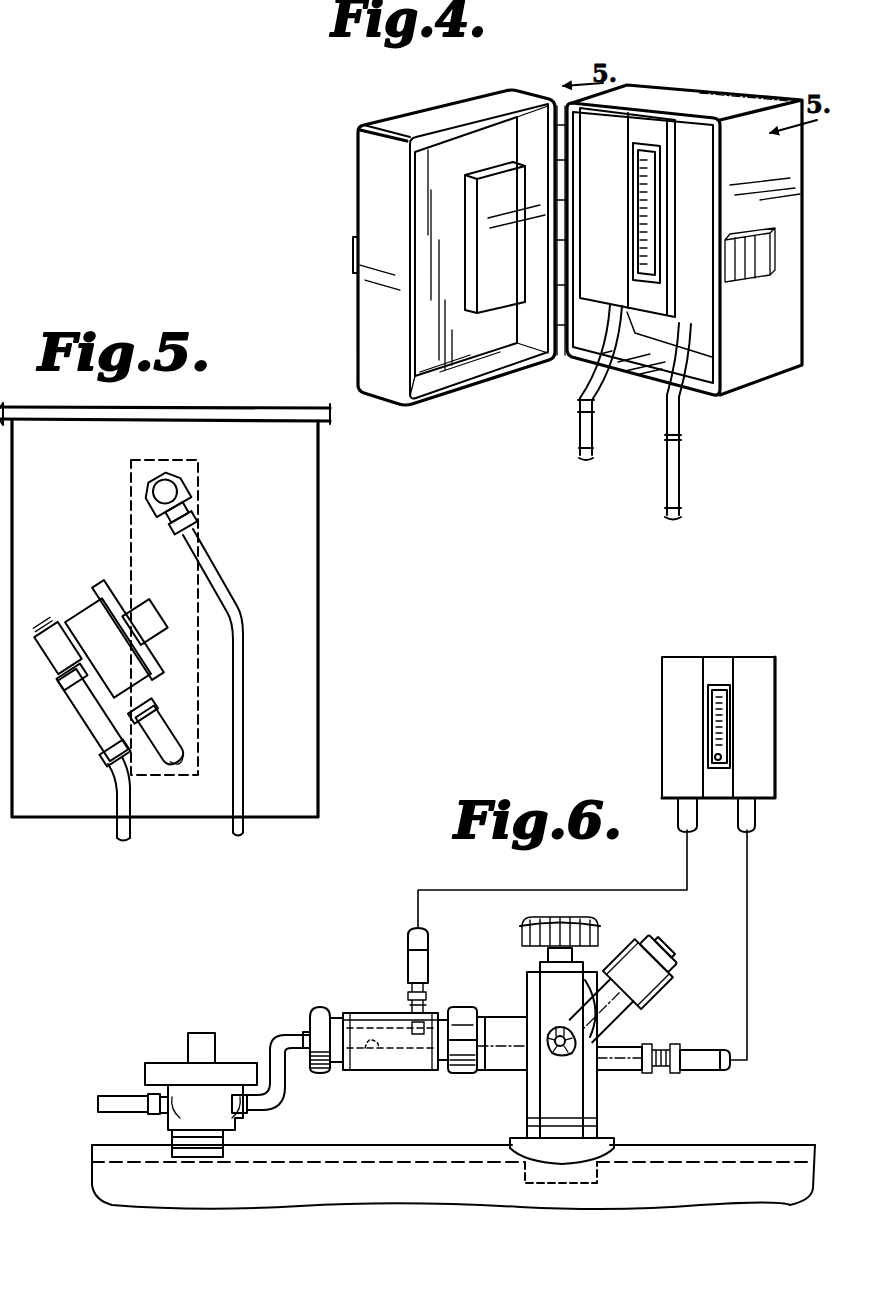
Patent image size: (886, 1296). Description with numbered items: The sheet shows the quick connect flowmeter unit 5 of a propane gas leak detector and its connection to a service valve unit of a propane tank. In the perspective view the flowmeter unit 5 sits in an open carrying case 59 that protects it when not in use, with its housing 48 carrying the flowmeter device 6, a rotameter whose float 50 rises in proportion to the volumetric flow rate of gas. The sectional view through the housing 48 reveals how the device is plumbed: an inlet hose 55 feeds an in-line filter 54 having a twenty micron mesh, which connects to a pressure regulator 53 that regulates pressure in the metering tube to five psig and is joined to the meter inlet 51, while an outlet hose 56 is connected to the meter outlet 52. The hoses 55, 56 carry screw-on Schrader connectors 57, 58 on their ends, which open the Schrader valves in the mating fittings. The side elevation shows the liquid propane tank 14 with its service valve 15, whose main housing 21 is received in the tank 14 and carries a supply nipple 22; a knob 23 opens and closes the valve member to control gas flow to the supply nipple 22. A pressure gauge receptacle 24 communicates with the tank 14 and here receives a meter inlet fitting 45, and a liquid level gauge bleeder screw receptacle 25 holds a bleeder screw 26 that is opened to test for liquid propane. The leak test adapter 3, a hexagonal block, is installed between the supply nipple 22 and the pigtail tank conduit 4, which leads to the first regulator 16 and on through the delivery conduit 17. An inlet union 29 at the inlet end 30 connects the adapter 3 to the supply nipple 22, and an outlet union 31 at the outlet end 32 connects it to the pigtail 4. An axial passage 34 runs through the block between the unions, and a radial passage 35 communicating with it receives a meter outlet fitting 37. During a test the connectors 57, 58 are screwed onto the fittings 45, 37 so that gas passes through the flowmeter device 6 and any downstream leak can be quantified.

In FIG. 6, the leak test adapter 3 is at (393, 1035).
In FIG. 6, the tank conduit 4 is at (277, 1040).
In FIG. 4, the flowmeter unit 5 is at (690, 130).
In FIG. 5, the flowmeter unit 5 is at (320, 586).
In FIG. 6, the flowmeter unit 5 is at (684, 655).
In FIG. 4, the flowmeter device 6 is at (633, 170).
In FIG. 5, the flowmeter device 6 is at (131, 497).
In FIG. 6, the flowmeter device 6 is at (708, 712).
In FIG. 6, the liquid propane tank 14 is at (728, 1145).
In FIG. 6, the service valve 15 is at (578, 1028).
In FIG. 6, the first regulator 16 is at (170, 1068).
In FIG. 6, the delivery conduit 17 is at (110, 1096).
In FIG. 6, the main housing 21 is at (598, 1100).
In FIG. 6, the supply nipple 22 is at (495, 1070).
In FIG. 6, the knob 23 is at (585, 918).
In FIG. 6, the pressure gauge receptacle 24 is at (616, 1070).
In FIG. 6, the liquid level gauge bleeder screw receptacle 25 is at (598, 1053).
In FIG. 6, the bleeder screw 26 is at (558, 1056).
In FIG. 6, the inlet union 29 is at (453, 1012).
In FIG. 6, the inlet end 30 is at (430, 1068).
In FIG. 6, the outlet union 31 is at (314, 1012).
In FIG. 6, the outlet end 32 is at (348, 1070).
In FIG. 6, the axial passage 34 is at (374, 1052).
In FIG. 6, the radial passage 35 is at (418, 1026).
In FIG. 6, the meter outlet fitting 37 is at (423, 1005).
In FIG. 6, the meter inlet fitting 45 is at (664, 1068).
In FIG. 4, the housing 48 is at (700, 290).
In FIG. 5, the housing 48 is at (297, 707).
In FIG. 6, the float 50 is at (715, 758).
In FIG. 5, the meter inlet 51 is at (164, 752).
In FIG. 5, the meter outlet 52 is at (193, 669).
In FIG. 5, the pressure regulator 53 is at (85, 605).
In FIG. 5, the in-line filter 54 is at (83, 768).
In FIG. 4, the inlet hose 55 is at (660, 455).
In FIG. 5, the inlet hose 55 is at (114, 832).
In FIG. 6, the inlet hose 55 is at (733, 1070).
In FIG. 4, the outlet hose 56 is at (598, 398).
In FIG. 5, the outlet hose 56 is at (228, 832).
In FIG. 6, the outlet hose 56 is at (408, 934).
In FIG. 4, the Schrader connector 57 is at (682, 514).
In FIG. 6, the Schrader connector 57 is at (707, 1050).
In FIG. 4, the Schrader connector 58 is at (580, 454).
In FIG. 6, the Schrader connector 58 is at (407, 966).
In FIG. 4, the carrying case 59 is at (482, 396).
In FIG. 5, the carrying case 59 is at (332, 422).